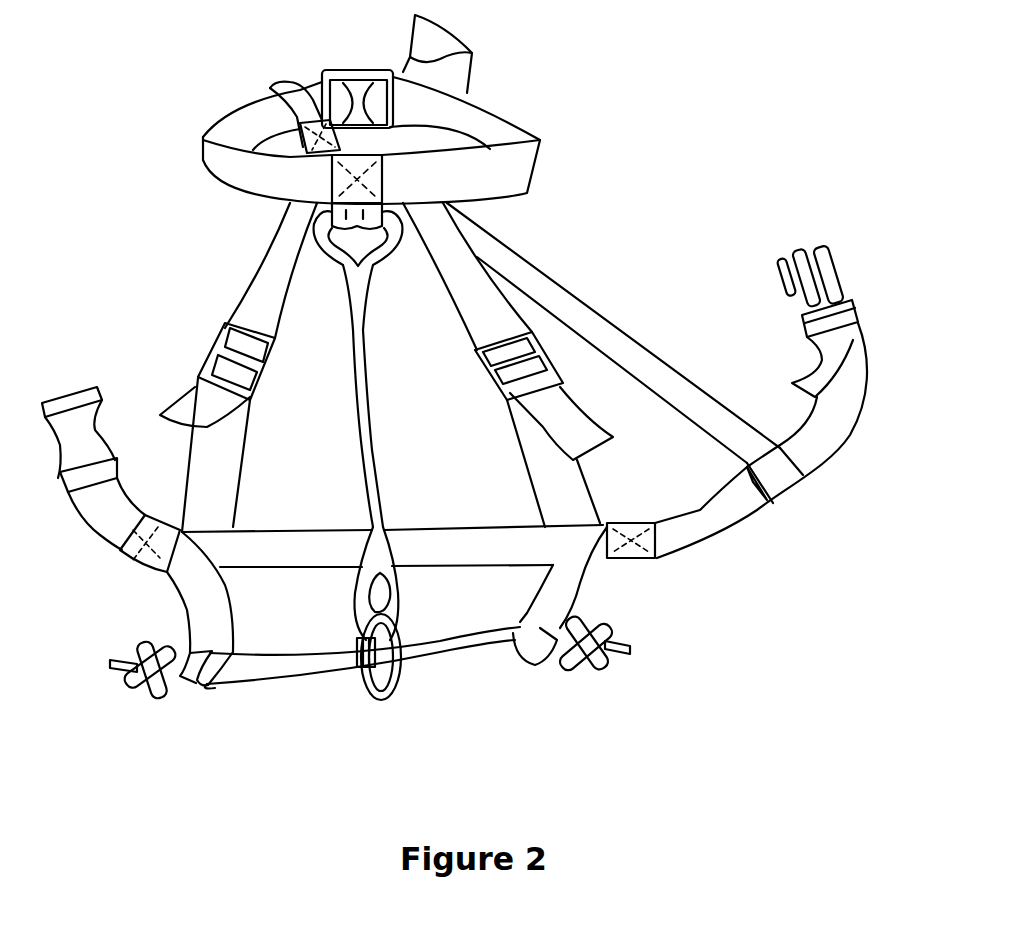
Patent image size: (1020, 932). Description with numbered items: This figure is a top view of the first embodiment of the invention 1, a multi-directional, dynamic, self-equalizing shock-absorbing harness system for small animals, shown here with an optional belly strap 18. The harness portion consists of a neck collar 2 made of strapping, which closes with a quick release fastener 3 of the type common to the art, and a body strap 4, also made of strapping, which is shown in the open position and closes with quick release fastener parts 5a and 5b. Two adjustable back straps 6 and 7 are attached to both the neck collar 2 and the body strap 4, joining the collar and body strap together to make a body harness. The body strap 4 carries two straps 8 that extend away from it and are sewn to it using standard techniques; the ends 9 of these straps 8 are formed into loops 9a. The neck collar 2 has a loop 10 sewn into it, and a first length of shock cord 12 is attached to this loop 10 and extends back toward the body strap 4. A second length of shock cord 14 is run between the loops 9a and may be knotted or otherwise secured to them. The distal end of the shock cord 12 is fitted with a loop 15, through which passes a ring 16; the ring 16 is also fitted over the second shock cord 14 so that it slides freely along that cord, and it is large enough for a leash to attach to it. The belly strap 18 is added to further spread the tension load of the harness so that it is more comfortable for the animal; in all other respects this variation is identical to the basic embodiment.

The invention 1 is at (690, 136).
The neck collar 2 is at (227, 105).
The quick release fastener 3 is at (370, 68).
The body strap 4 is at (765, 472).
The quick release fastener part 5a is at (57, 372).
The quick release fastener part 5b is at (842, 258).
The adjustable back strap 6 is at (248, 447).
The adjustable back strap 7 is at (520, 448).
The strap 8 is at (240, 608).
The end 9 is at (190, 697).
The loop 9a is at (217, 690).
The loop 10 is at (382, 176).
The first length of shock cord 12 is at (369, 337).
The second length of shock cord 14 is at (470, 657).
The loop 15 is at (392, 577).
The ring 16 is at (398, 693).
The belly strap 18 is at (580, 308).